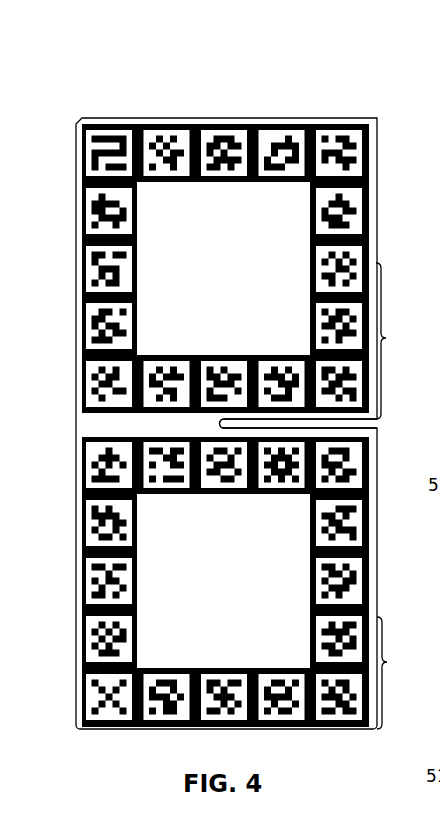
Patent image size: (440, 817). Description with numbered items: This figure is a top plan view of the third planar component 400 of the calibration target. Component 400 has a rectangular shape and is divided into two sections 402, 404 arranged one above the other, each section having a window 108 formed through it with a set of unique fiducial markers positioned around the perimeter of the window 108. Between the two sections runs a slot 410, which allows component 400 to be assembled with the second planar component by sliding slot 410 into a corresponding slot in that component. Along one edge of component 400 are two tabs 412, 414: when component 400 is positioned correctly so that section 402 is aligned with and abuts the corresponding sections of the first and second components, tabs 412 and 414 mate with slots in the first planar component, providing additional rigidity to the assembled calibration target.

The third planar component 400 is at (134, 92).
The section 402 is at (76, 244).
The section 404 is at (76, 578).
The window 108 is at (206, 266).
The slot 410 is at (380, 418).
The tab 412 is at (384, 668).
The tab 414 is at (382, 271).